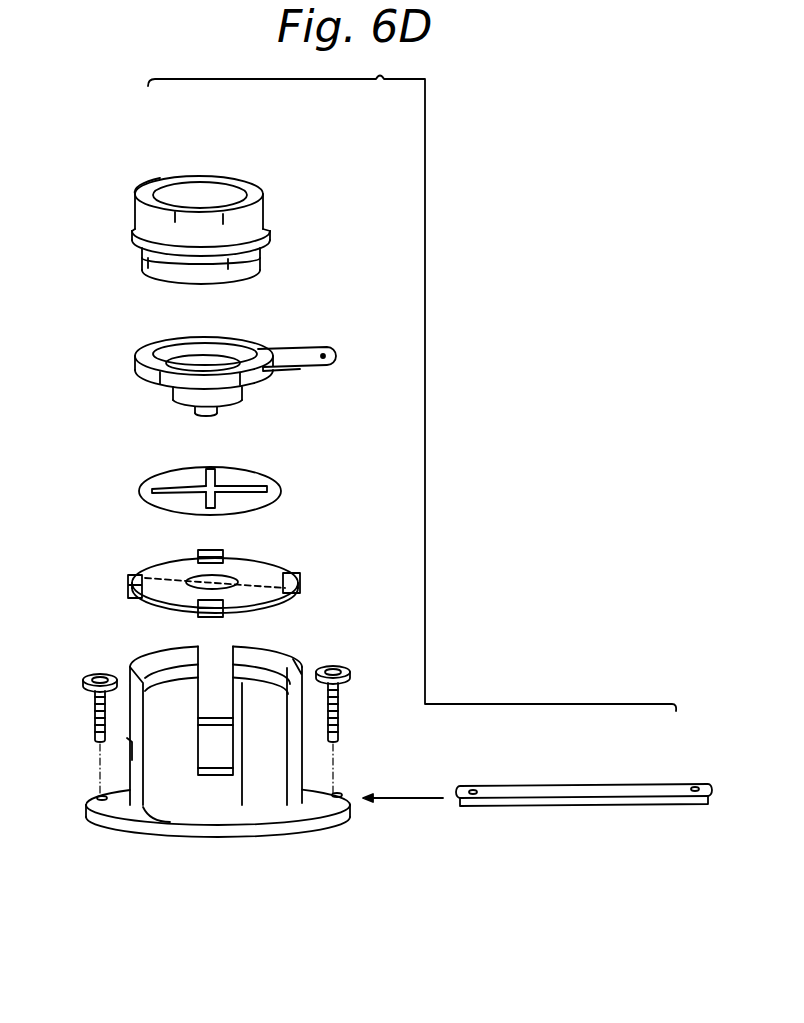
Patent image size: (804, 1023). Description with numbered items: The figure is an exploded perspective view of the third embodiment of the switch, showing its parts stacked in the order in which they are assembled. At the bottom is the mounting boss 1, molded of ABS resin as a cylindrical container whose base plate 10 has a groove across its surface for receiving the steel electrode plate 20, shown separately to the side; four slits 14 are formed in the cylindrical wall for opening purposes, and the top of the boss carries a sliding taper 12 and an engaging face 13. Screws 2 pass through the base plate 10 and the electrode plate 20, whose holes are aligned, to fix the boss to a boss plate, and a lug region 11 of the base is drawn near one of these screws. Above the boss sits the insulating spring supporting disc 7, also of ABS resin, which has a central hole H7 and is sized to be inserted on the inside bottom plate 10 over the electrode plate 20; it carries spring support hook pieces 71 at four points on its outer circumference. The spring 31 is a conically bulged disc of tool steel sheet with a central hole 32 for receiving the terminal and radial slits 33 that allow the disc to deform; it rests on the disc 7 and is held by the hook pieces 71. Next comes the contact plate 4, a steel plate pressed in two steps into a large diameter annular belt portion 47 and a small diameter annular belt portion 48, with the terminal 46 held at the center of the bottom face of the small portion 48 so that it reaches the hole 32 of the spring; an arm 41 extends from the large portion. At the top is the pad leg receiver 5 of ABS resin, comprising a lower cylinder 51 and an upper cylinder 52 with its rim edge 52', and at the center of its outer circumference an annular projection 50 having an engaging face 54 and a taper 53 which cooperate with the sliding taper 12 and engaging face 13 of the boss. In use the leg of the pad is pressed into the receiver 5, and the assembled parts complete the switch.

The mounting boss 1 is at (95, 760).
The screw 2 is at (340, 708).
The contact plate 4 is at (133, 349).
The pad leg receiver 5 is at (254, 171).
The spring supporting disc 7 is at (167, 567).
The hole H7 is at (232, 580).
The base plate 10 is at (170, 808).
The mounting lug with hole 11 is at (290, 803).
The sliding taper 12 is at (272, 655).
The engaging face 13 is at (272, 656).
The slits 14 is at (228, 758).
The electrode plate 20 is at (628, 786).
The spring 31 is at (288, 492).
The hole 32 is at (220, 468).
The slits 33 is at (250, 483).
The handle 41 is at (313, 349).
The terminal 46 is at (213, 416).
The large diameter annular belt portion 47 is at (155, 378).
The small diameter annular belt portion 48 is at (186, 402).
The annular projection 50 is at (268, 237).
The lower cylinder 51 is at (245, 270).
The upper cylinder 52 is at (234, 202).
The upper cylindrical portion edge 52' is at (147, 160).
The taper 53 is at (133, 245).
The engaging face 54 is at (132, 226).
The hook pieces 71 is at (128, 582).